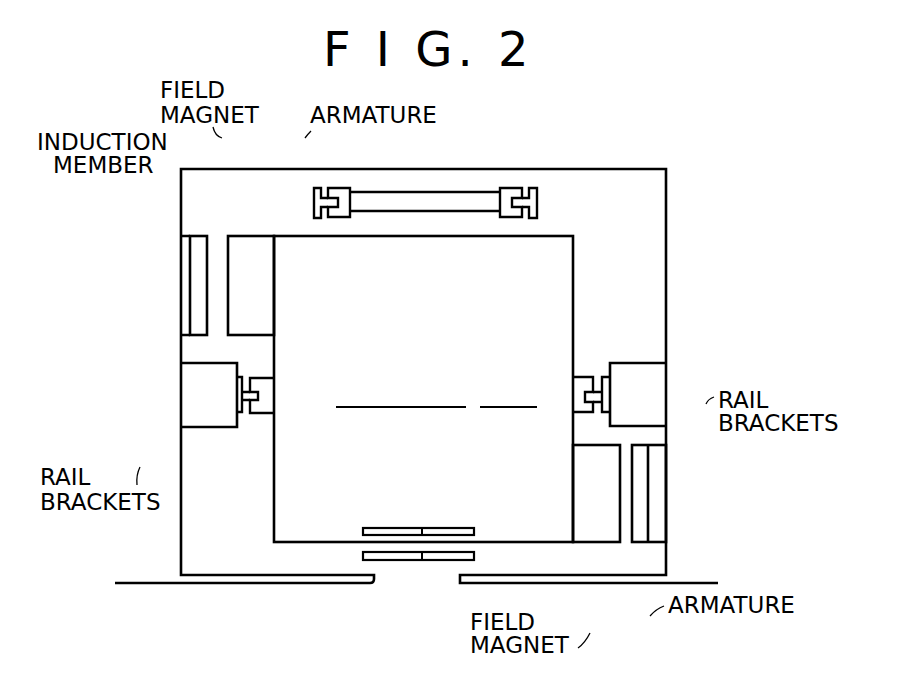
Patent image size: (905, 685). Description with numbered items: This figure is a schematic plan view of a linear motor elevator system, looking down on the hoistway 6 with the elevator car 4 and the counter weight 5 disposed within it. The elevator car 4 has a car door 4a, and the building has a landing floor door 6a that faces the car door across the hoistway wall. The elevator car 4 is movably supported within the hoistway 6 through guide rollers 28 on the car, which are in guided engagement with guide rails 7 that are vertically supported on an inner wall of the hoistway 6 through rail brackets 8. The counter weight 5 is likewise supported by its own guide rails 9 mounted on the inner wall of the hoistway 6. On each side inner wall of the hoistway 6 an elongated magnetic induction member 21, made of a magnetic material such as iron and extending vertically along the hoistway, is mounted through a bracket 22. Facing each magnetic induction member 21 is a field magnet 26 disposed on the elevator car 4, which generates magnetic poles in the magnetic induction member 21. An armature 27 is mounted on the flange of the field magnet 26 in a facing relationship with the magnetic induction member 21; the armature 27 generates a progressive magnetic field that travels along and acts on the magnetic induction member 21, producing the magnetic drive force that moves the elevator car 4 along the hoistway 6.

The elevator car 4 is at (274, 527).
The car door 4a is at (442, 529).
The counter weight 5 is at (458, 190).
The hoistway 6 is at (655, 230).
The landing floor door 6a is at (440, 561).
The guide rails 7 is at (237, 400).
The rail brackets 8 is at (205, 428).
The guide rails 9 is at (531, 187).
The magnetic induction member 21 is at (192, 236).
The bracket 22 is at (188, 308).
The field magnet 26 is at (248, 246).
The armature 27 is at (592, 535).
The guide rollers 28 is at (262, 414).